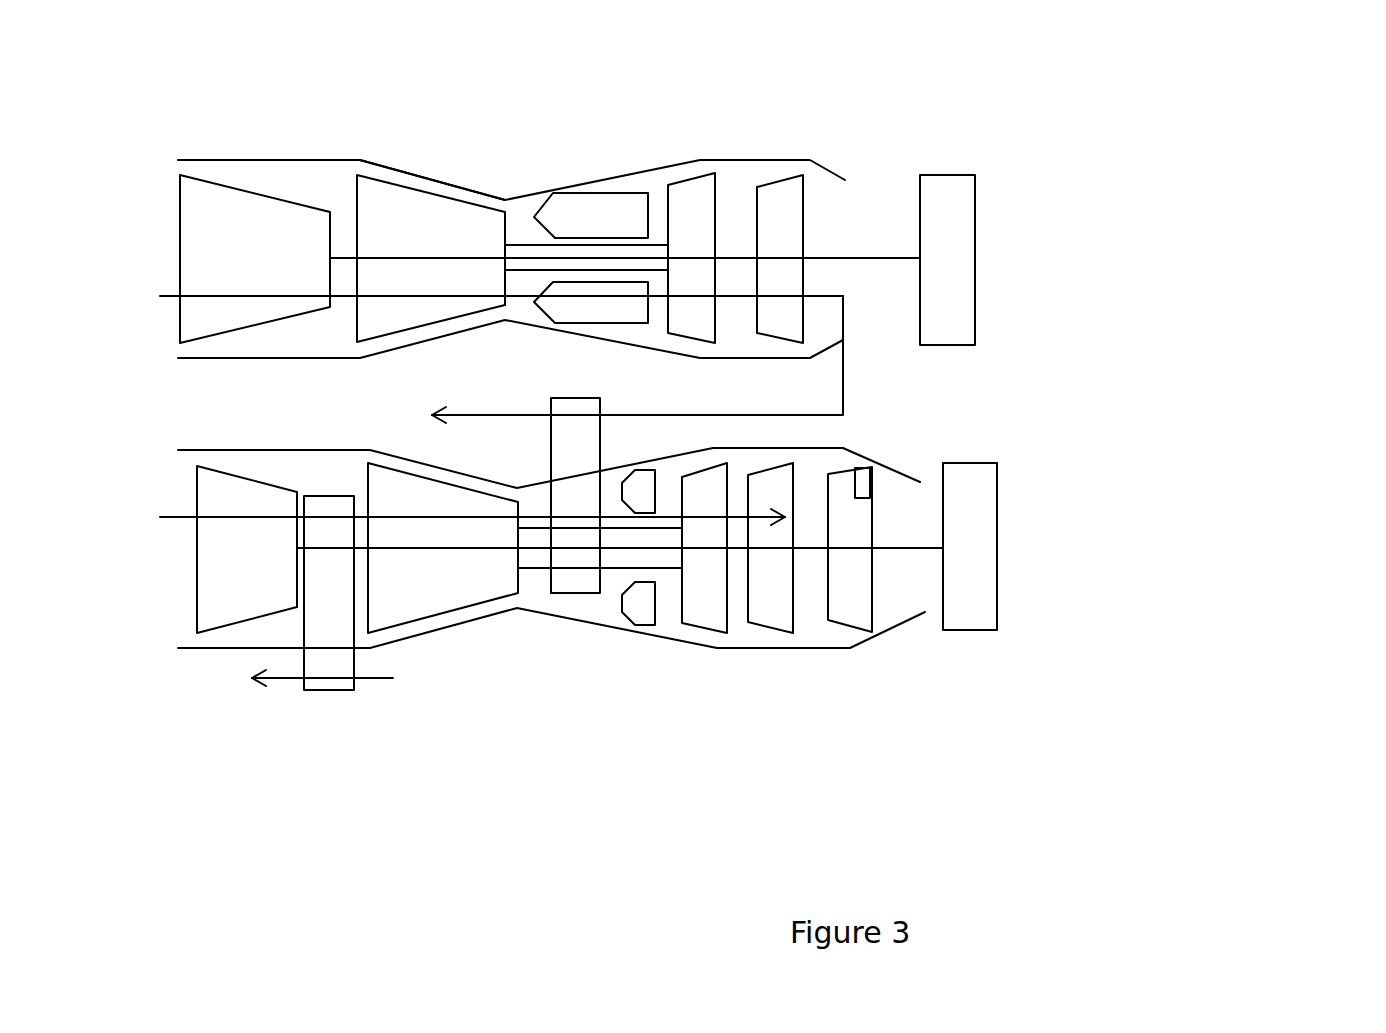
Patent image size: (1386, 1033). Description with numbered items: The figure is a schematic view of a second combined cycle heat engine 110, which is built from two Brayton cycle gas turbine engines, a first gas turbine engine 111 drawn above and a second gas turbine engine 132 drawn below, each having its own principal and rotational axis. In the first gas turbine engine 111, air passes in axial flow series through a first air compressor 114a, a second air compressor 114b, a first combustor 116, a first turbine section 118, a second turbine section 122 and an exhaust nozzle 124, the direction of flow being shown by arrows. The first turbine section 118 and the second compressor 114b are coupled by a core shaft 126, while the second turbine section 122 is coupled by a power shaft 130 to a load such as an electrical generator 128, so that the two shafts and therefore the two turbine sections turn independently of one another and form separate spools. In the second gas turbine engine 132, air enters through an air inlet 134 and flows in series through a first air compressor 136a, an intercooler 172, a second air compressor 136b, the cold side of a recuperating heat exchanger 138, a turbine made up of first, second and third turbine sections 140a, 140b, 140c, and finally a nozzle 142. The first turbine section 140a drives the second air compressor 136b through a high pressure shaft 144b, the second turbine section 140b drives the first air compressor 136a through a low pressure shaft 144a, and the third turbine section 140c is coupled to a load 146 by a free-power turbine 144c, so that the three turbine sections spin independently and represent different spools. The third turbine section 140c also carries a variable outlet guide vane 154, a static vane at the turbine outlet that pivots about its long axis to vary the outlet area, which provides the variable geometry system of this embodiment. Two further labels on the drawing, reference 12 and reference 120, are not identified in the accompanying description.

The heat transfer flow 12 is at (178, 372).
The second combined cycle heat engine 110 is at (1178, 380).
The first gas turbine engine 111 is at (843, 117).
The first air compressor 114a is at (290, 208).
The second air compressor 114b is at (368, 225).
The first combustor 116 is at (550, 200).
The first turbine section 118 is at (692, 180).
The heat exchanger outlet 120 is at (588, 595).
The second turbine section 122 is at (778, 178).
The exhaust nozzle 124 is at (857, 193).
The core shaft 126 is at (535, 272).
The electrical generator 128 is at (975, 203).
The power shaft 130 is at (870, 260).
The second gas turbine engine 132 is at (590, 692).
The air inlet 134 is at (195, 623).
The first air compressor 136a is at (233, 627).
The second air compressor 136b is at (442, 615).
The recuperating heat exchanger 138 is at (638, 633).
The first turbine section 140a is at (727, 627).
The second turbine section 140b is at (773, 630).
The third turbine section 140c is at (868, 637).
The nozzle 142 is at (925, 613).
The low pressure shaft 144a is at (528, 548).
The high pressure shaft 144b is at (670, 568).
The free-power turbine 144c is at (910, 547).
The load 146 is at (997, 580).
The variable outlet guide vane 154 is at (867, 462).
The intercooler 172 is at (330, 690).